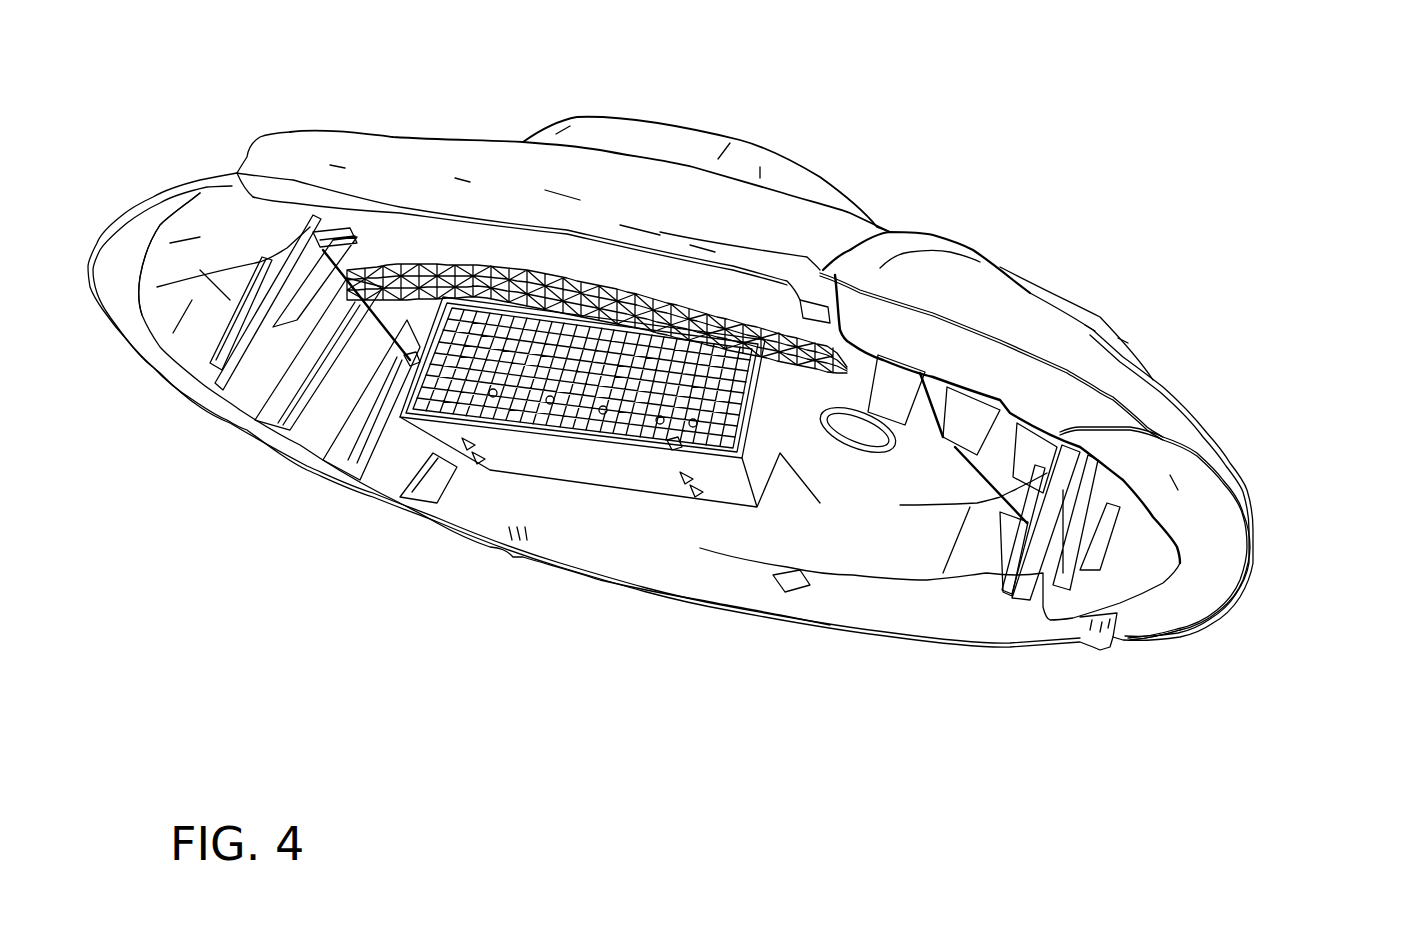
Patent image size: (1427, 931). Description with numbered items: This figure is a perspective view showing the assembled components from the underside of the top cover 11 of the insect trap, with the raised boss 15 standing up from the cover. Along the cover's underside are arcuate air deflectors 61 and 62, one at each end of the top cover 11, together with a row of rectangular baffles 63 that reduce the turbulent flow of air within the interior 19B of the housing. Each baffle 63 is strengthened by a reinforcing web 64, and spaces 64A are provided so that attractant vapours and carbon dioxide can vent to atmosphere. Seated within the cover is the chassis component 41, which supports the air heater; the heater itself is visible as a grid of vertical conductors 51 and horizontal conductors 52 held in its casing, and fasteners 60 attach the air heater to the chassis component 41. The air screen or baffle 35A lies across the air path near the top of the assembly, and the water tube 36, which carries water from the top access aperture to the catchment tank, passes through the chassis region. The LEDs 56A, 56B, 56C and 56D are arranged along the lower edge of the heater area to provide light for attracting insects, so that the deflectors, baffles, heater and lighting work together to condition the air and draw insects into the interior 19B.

The top cover 11 is at (978, 193).
The raised boss 15 is at (783, 163).
The air screen or baffle 35A is at (628, 288).
The horizontal conductors 52 is at (590, 313).
The vertical conductors 51 is at (740, 400).
The chassis component 41 is at (806, 546).
The arcuate air deflector 61 is at (1007, 420).
The water tube 36 is at (850, 440).
The rectangular baffle 63 is at (288, 427).
The reinforcing web 64 is at (337, 305).
The spaces 64A is at (930, 467).
The arcuate air deflector 62 is at (138, 295).
The fasteners 60 is at (428, 360).
The LED 56A is at (656, 423).
The LED 56B is at (600, 414).
The LED 56C is at (545, 403).
The LED 56D is at (488, 396).
The interior 19B is at (1147, 557).